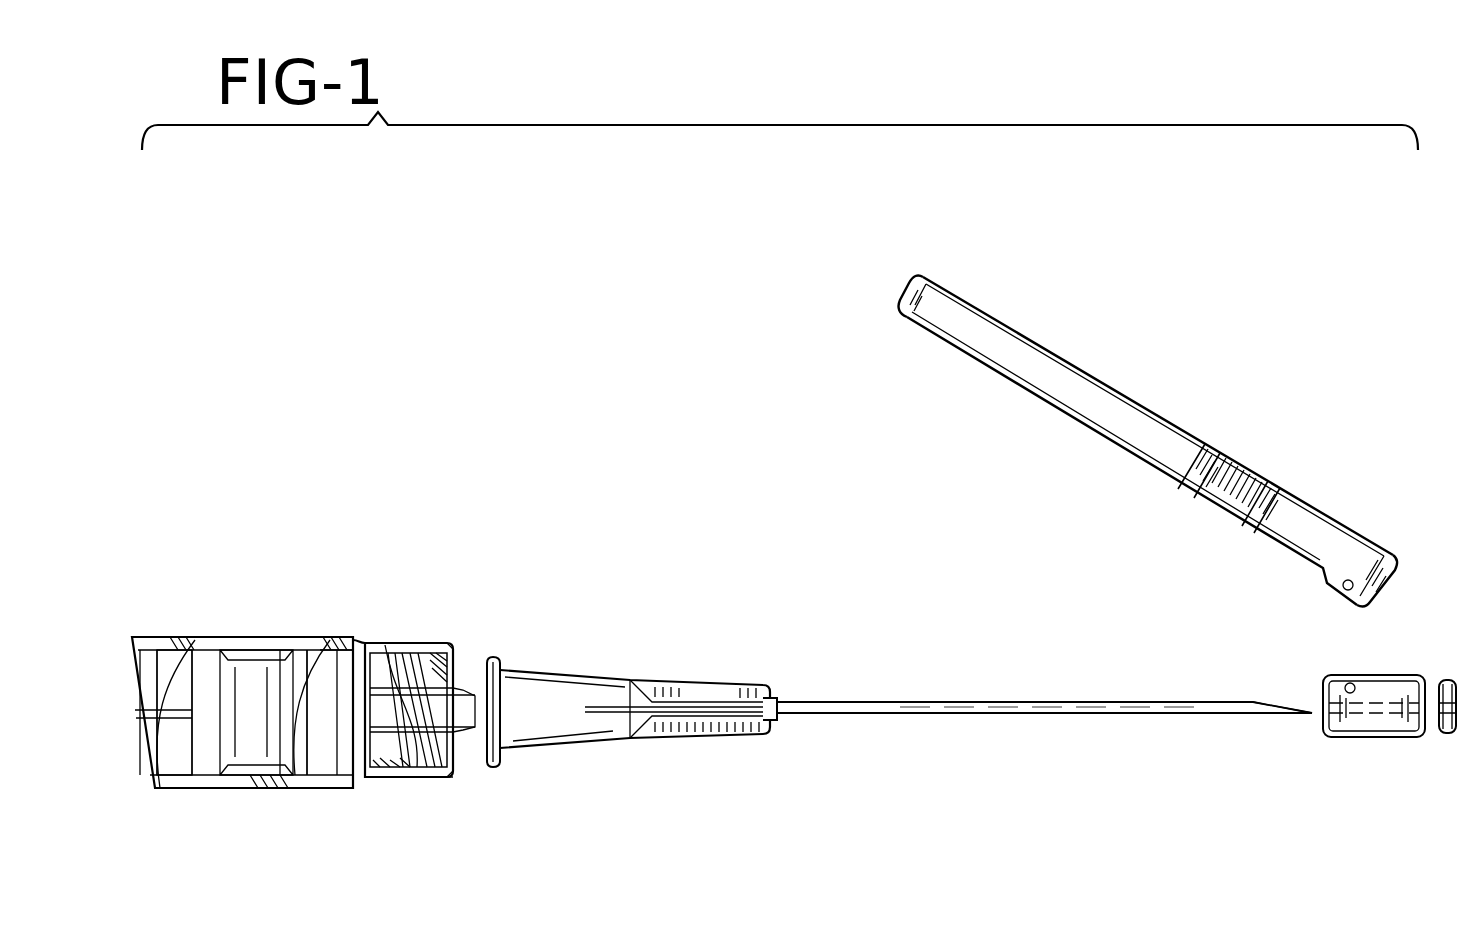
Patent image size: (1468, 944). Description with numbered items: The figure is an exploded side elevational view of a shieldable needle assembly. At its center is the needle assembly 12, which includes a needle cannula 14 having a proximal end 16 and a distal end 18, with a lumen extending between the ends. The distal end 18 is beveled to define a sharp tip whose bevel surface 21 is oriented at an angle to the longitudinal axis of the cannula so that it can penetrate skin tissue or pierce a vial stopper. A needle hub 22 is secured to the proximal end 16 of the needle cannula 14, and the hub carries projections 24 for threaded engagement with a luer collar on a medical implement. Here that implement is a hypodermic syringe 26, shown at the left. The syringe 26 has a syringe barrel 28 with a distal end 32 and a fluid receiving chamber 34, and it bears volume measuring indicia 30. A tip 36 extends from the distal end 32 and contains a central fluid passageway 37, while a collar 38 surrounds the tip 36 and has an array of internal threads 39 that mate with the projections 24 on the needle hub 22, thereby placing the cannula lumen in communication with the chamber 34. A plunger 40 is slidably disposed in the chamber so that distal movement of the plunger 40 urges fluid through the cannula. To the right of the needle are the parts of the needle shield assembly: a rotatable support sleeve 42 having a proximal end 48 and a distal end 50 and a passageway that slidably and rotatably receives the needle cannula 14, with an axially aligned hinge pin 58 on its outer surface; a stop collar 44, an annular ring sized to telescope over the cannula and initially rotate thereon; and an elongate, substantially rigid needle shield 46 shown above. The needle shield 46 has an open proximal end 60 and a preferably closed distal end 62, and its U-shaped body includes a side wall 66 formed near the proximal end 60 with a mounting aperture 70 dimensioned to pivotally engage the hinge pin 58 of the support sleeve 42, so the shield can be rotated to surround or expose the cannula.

The needle assembly 12 is at (899, 704).
The needle cannula 14 is at (1044, 710).
The proximal end 16 is at (797, 700).
The distal end 18 is at (1185, 713).
The bevel surface 21 is at (1283, 708).
The needle hub 22 is at (547, 738).
The projections 24 is at (498, 660).
The hypodermic syringe 26 is at (242, 706).
The syringe barrel 28 is at (179, 637).
The volume measuring indicia 30 is at (230, 727).
The distal end 32 is at (426, 710).
The fluid receiving chamber 34 is at (320, 733).
The tip 36 is at (386, 645).
The fluid passageway 37 is at (322, 640).
The collar 38 is at (447, 640).
The internal threads 39 is at (418, 780).
The plunger 40 is at (210, 743).
The support sleeve 42 is at (1351, 775).
The stop collar 44 is at (1447, 668).
The needle shield 46 is at (1116, 413).
The proximal end 48 is at (1323, 723).
The distal end 50 is at (1425, 737).
The hinge pin 58 is at (1350, 700).
The open proximal end 60 is at (1386, 522).
The closed distal end 62 is at (907, 298).
The side wall 66 is at (990, 345).
The mounting aperture 70 is at (1346, 580).